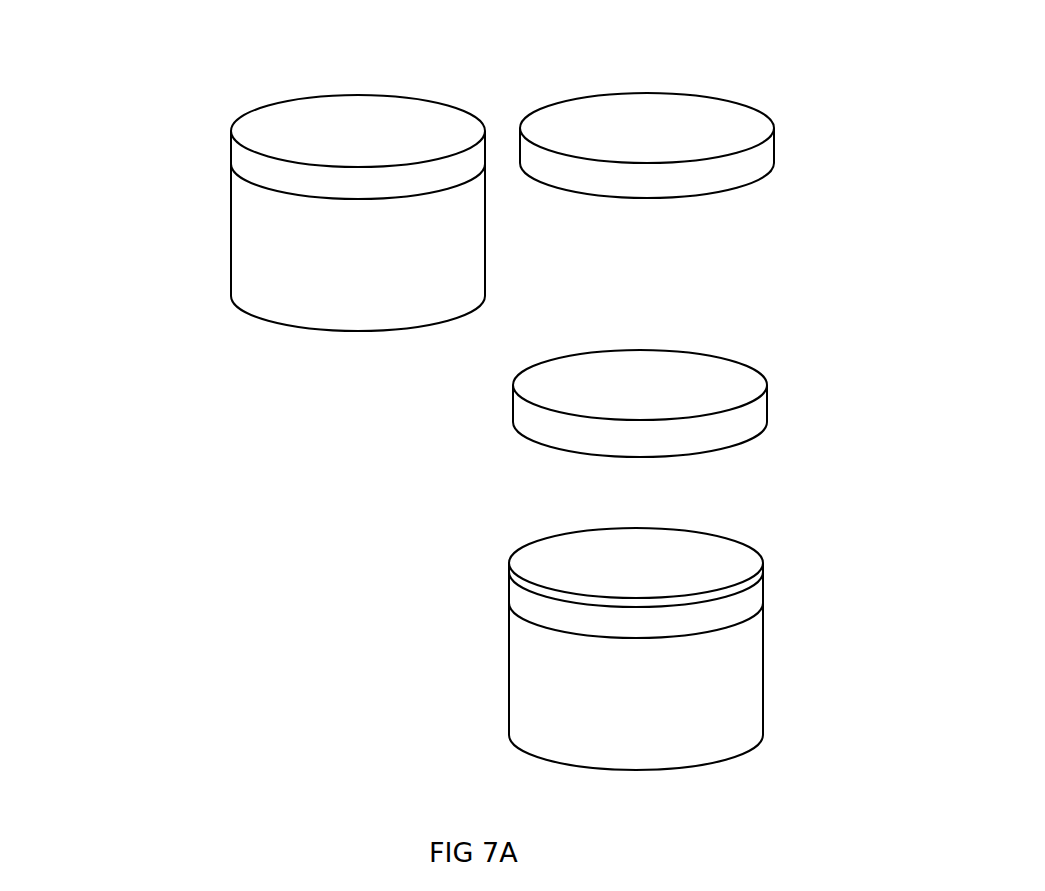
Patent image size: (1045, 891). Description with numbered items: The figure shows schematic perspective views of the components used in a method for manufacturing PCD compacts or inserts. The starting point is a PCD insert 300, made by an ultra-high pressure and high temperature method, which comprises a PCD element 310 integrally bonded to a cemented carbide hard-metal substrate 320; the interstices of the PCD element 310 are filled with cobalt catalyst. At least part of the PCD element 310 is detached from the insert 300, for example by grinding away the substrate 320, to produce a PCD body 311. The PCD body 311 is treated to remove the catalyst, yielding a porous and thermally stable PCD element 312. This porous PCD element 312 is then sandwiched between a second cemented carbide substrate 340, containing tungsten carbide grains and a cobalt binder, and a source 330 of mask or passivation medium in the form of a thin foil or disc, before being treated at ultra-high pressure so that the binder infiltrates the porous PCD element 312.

The PCD insert 300 is at (188, 103).
The PCD element 310 is at (230, 147).
The cemented carbide hard-metal substrate 320 is at (230, 225).
The PCD body 311 is at (774, 141).
The porous and thermally stable PCD element 312 is at (767, 402).
The source of mask or passivation medium 330 is at (708, 549).
The second cemented carbide substrate 340 is at (763, 657).